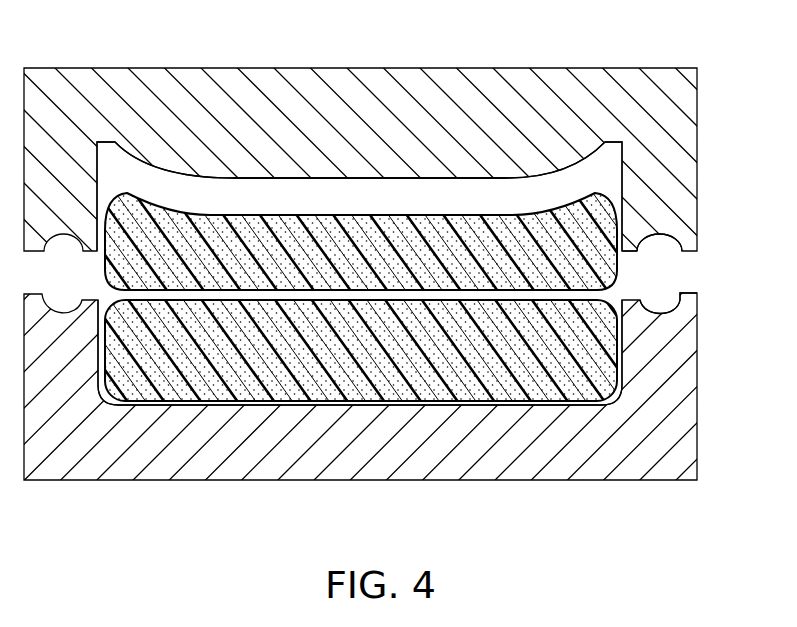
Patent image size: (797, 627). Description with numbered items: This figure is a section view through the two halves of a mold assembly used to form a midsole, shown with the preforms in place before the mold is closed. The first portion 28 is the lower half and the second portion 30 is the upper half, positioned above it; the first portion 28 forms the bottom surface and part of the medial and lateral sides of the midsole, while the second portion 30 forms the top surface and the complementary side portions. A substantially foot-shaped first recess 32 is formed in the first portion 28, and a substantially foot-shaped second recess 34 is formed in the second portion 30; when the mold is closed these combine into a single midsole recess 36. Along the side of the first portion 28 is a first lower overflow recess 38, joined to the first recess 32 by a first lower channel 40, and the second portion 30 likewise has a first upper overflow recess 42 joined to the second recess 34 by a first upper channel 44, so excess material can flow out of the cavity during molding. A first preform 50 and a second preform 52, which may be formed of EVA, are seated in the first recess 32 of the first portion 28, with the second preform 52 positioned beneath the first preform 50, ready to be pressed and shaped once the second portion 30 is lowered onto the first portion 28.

The first portion 28 is at (457, 466).
The second portion 30 is at (300, 83).
The first recess 32 is at (490, 398).
The second recess 34 is at (417, 183).
The midsole recess 36 is at (319, 187).
The first lower overflow recess 38 is at (660, 310).
The first lower channel 40 is at (636, 292).
The first upper overflow recess 42 is at (627, 252).
The first upper channel 44 is at (665, 256).
The first preform 50 is at (223, 228).
The second preform 52 is at (220, 383).